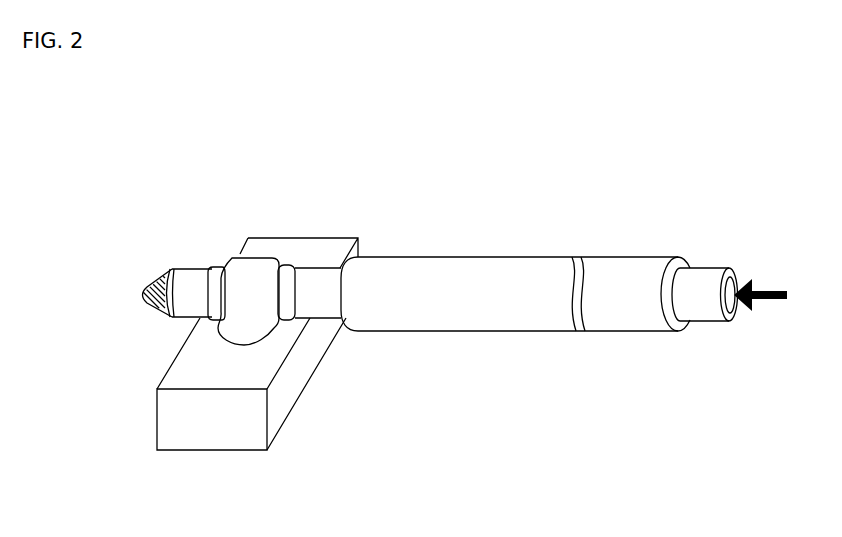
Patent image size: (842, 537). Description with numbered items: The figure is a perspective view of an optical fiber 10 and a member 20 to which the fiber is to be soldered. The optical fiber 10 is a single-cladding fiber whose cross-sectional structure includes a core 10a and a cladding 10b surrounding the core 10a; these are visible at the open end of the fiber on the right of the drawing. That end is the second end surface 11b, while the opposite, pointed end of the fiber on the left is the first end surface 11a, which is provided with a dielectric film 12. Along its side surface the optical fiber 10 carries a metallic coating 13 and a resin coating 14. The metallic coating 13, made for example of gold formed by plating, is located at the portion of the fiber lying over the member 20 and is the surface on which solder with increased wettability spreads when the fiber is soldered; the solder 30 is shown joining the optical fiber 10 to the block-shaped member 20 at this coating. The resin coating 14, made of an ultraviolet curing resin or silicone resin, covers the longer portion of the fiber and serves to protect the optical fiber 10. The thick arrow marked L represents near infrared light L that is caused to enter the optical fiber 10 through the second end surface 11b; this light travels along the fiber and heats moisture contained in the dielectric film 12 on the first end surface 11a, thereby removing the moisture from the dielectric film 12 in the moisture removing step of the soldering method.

The optical fiber 10 is at (323, 277).
The core 10a is at (737, 307).
The cladding 10b is at (733, 321).
The first end surface 11a is at (120, 271).
The second end surface 11b is at (744, 270).
The dielectric film 12 is at (145, 303).
The metallic coating 13 is at (218, 265).
The resin coating 14 is at (443, 320).
The member 20 is at (208, 440).
The solder 30 is at (262, 266).
The near infrared light L is at (768, 295).